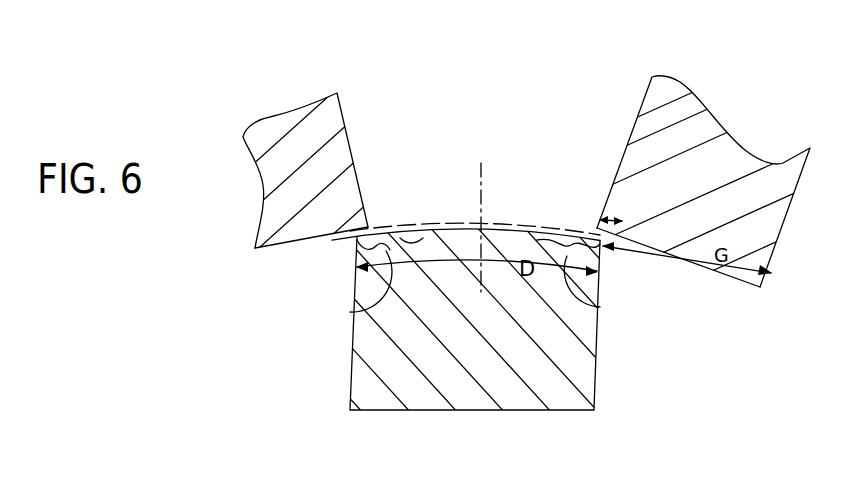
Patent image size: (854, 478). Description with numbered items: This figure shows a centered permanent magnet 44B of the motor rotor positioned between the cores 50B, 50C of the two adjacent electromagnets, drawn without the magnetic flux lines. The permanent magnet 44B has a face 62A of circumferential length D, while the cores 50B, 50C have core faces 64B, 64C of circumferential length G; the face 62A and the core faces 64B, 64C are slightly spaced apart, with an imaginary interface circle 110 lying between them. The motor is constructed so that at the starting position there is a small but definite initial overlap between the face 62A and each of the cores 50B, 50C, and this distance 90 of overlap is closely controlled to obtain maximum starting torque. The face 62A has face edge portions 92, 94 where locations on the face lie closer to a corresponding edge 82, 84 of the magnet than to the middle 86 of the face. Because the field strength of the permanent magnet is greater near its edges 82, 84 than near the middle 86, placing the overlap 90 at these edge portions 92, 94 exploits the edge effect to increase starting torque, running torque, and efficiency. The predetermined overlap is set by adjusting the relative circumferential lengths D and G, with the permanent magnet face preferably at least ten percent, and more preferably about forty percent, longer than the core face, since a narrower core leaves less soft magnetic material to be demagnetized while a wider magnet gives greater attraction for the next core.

The permanent magnet 44B is at (340, 391).
The electromagnet core 50B is at (287, 108).
The electromagnet core 50C is at (672, 78).
The face of the permanent magnet 62A is at (450, 229).
The core face 64B is at (280, 245).
The core face 64C is at (712, 268).
The edge of the magnet 82 is at (356, 265).
The edge of the magnet 84 is at (604, 268).
The middle of the face 86 is at (487, 228).
The distance of overlap 90 is at (607, 220).
The face edge portion 92 is at (358, 307).
The face edge portion 94 is at (603, 312).
The imaginary interface circle 110 is at (418, 228).